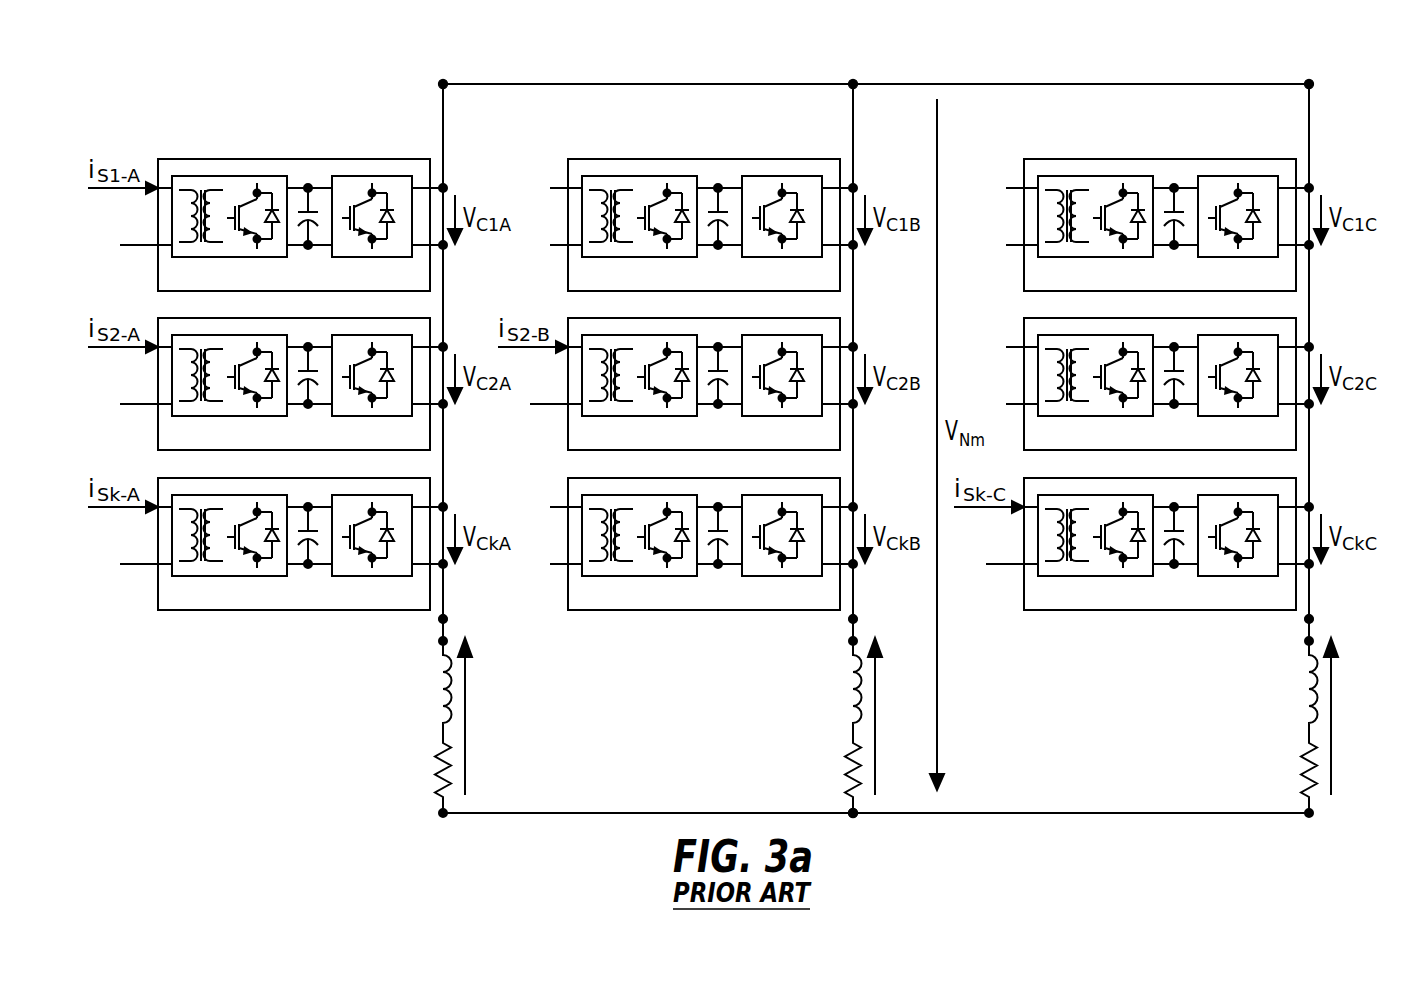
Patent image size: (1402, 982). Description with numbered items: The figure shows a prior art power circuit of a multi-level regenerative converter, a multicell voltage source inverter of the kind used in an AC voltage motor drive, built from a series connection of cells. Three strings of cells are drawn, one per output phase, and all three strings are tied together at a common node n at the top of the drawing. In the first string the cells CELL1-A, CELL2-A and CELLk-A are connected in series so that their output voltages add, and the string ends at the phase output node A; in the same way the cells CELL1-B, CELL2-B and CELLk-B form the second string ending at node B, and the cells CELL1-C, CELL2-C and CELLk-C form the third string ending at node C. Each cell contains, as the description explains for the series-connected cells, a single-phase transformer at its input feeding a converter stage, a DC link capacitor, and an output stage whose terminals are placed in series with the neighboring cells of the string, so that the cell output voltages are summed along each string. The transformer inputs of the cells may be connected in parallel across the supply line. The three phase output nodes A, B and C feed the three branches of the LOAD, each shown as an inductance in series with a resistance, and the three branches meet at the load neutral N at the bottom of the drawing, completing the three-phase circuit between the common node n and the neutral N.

The cell CELL1-A is at (267, 225).
The cell CELL2-A is at (267, 384).
The cell CELLk-A is at (267, 544).
The cell CELL1-B is at (703, 225).
The cell CELL2-B is at (677, 384).
The cell CELLk-B is at (703, 544).
The cell CELL1-C is at (1159, 225).
The cell CELL2-C is at (1159, 384).
The cell CELLk-C is at (1133, 544).
The load LOAD is at (402, 650).
The common node n is at (876, 69).
The load neutral N is at (852, 832).
The phase A output node A is at (452, 618).
The phase B output node B is at (862, 618).
The phase C output node C is at (1318, 618).